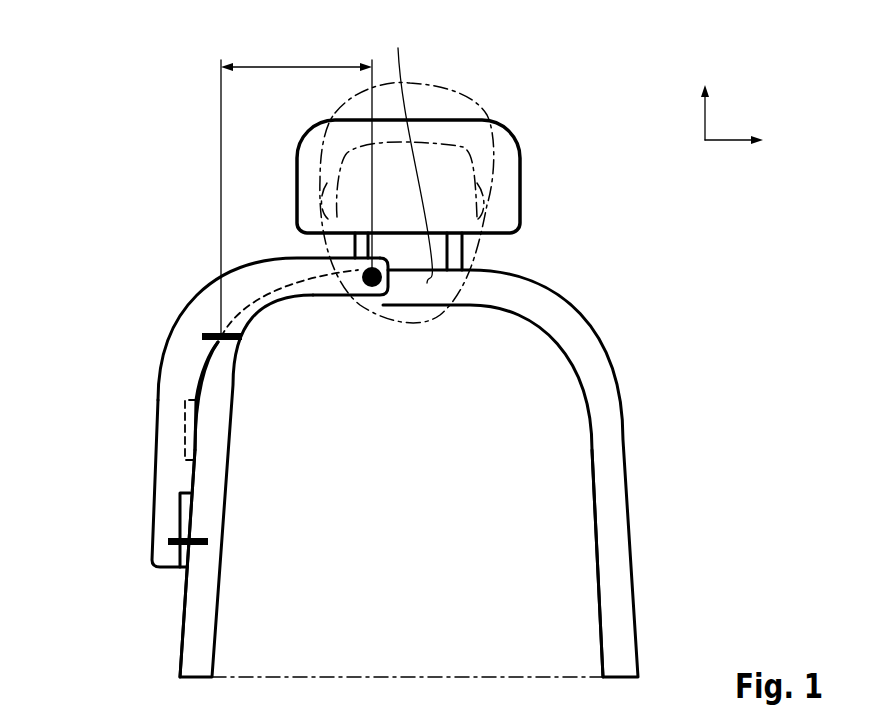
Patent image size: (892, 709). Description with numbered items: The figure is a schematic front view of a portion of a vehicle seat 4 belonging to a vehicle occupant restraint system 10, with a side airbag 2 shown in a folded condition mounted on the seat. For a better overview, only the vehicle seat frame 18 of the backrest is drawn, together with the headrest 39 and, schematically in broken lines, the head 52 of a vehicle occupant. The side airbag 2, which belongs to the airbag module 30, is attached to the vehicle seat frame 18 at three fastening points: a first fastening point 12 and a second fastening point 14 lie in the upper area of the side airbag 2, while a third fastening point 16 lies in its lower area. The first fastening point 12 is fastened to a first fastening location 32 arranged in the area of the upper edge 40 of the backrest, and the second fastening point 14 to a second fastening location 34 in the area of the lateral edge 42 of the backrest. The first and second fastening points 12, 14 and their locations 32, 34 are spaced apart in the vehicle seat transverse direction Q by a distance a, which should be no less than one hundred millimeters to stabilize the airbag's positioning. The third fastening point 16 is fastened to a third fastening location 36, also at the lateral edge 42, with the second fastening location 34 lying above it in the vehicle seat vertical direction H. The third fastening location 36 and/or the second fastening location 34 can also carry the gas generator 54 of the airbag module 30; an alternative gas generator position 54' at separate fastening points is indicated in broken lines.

The side airbag 2 is at (162, 474).
The vehicle seat 4 is at (613, 327).
The vehicle occupant restraint system 10 is at (115, 207).
The first fastening point 12 is at (372, 280).
The second fastening point 14 is at (222, 336).
The third fastening point 16 is at (187, 541).
The vehicle seat frame 18 is at (615, 531).
The airbag module 30 is at (158, 350).
The first fastening location 32 is at (360, 323).
The second fastening location 34 is at (235, 341).
The third fastening location 36 is at (205, 536).
The headrest 39 is at (508, 189).
The upper edge 40 is at (409, 149).
The lateral edge 42 is at (178, 645).
The head 52 is at (452, 102).
The gas generator 54 is at (144, 530).
The gas generator 54' is at (148, 430).
The distance a is at (295, 63).
The vehicle seat vertical direction H is at (705, 118).
The vehicle seat transverse direction Q is at (723, 140).